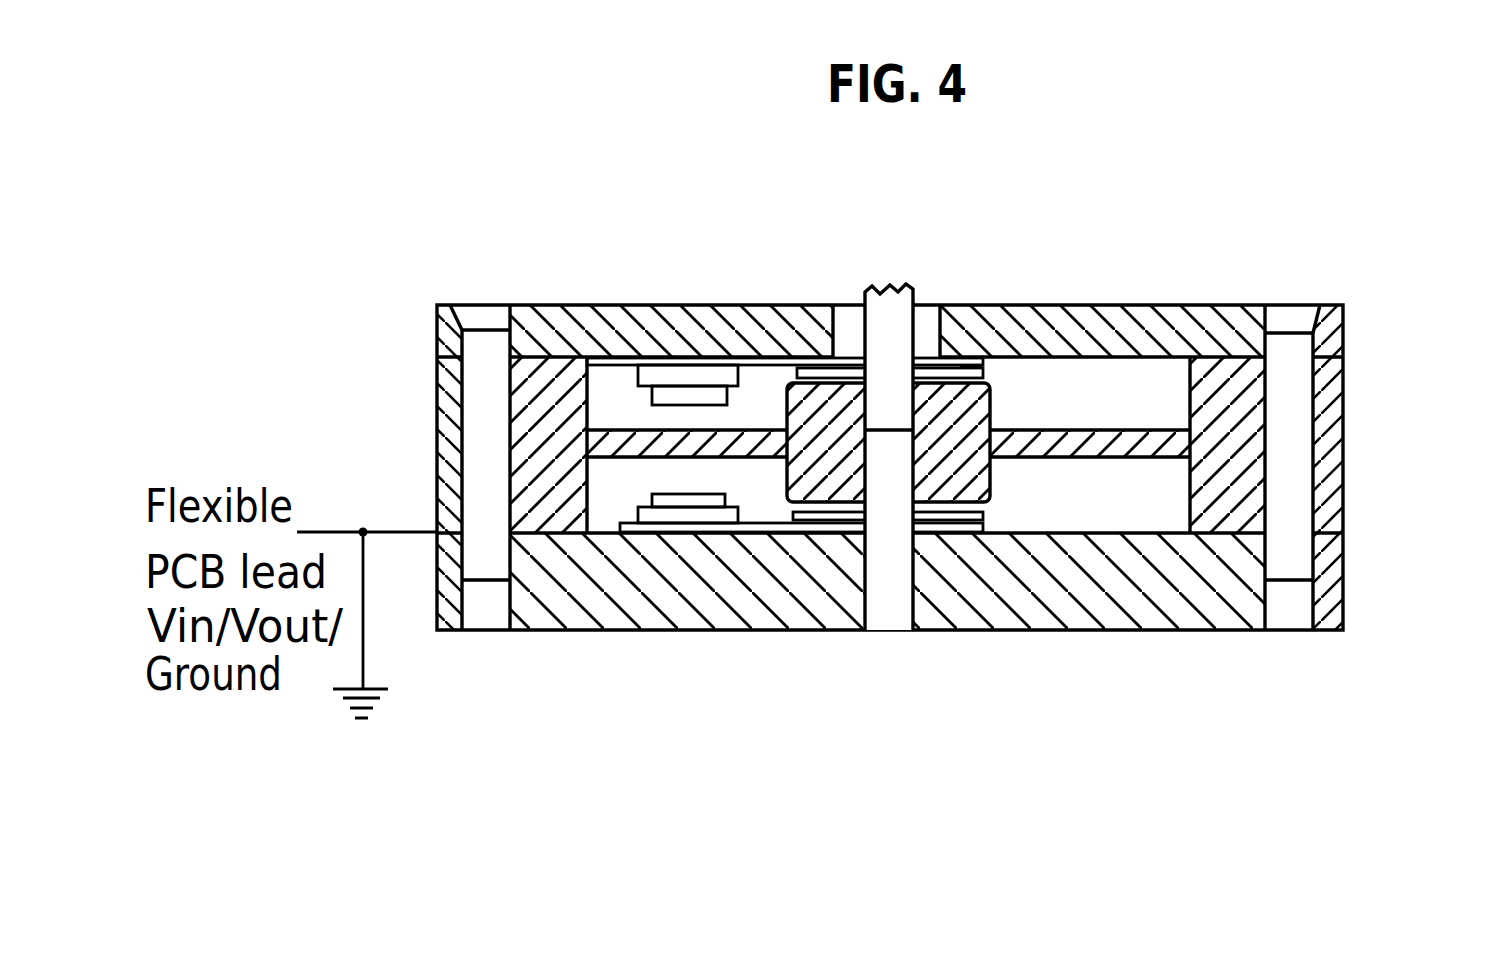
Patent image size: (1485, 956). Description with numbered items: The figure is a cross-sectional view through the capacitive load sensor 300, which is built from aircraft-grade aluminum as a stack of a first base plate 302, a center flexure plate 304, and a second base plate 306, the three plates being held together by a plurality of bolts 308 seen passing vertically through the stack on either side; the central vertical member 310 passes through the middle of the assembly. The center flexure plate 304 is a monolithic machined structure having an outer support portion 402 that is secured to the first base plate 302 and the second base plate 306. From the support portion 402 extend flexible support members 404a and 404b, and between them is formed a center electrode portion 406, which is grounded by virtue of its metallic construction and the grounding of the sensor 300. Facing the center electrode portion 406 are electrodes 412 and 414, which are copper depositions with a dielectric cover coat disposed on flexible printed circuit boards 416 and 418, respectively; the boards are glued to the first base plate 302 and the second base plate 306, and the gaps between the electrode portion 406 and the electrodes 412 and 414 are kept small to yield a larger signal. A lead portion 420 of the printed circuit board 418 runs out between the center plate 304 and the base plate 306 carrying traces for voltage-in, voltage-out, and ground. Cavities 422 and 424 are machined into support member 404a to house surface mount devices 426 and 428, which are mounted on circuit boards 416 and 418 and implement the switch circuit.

The capacitive load sensor 300 is at (1376, 222).
The first base plate 302 is at (1345, 331).
The center flexure plate 304 is at (1345, 476).
The second base plate 306 is at (1345, 590).
The bolt 308 is at (480, 315).
The actuator shaft 310 is at (898, 297).
The outer support portion 402 is at (553, 377).
The flexible support member 404a is at (697, 440).
The flexible support member 404b is at (1127, 445).
The center electrode portion 406 is at (785, 500).
The electrode 412 is at (967, 370).
The electrode 414 is at (968, 518).
The printed circuit board 416 is at (979, 363).
The printed circuit board 418 is at (982, 527).
The lead portion 420 is at (363, 530).
The cavity 422 is at (763, 377).
The cavity 424 is at (757, 508).
The surface mount device 426 is at (680, 397).
The surface mount device 428 is at (700, 502).